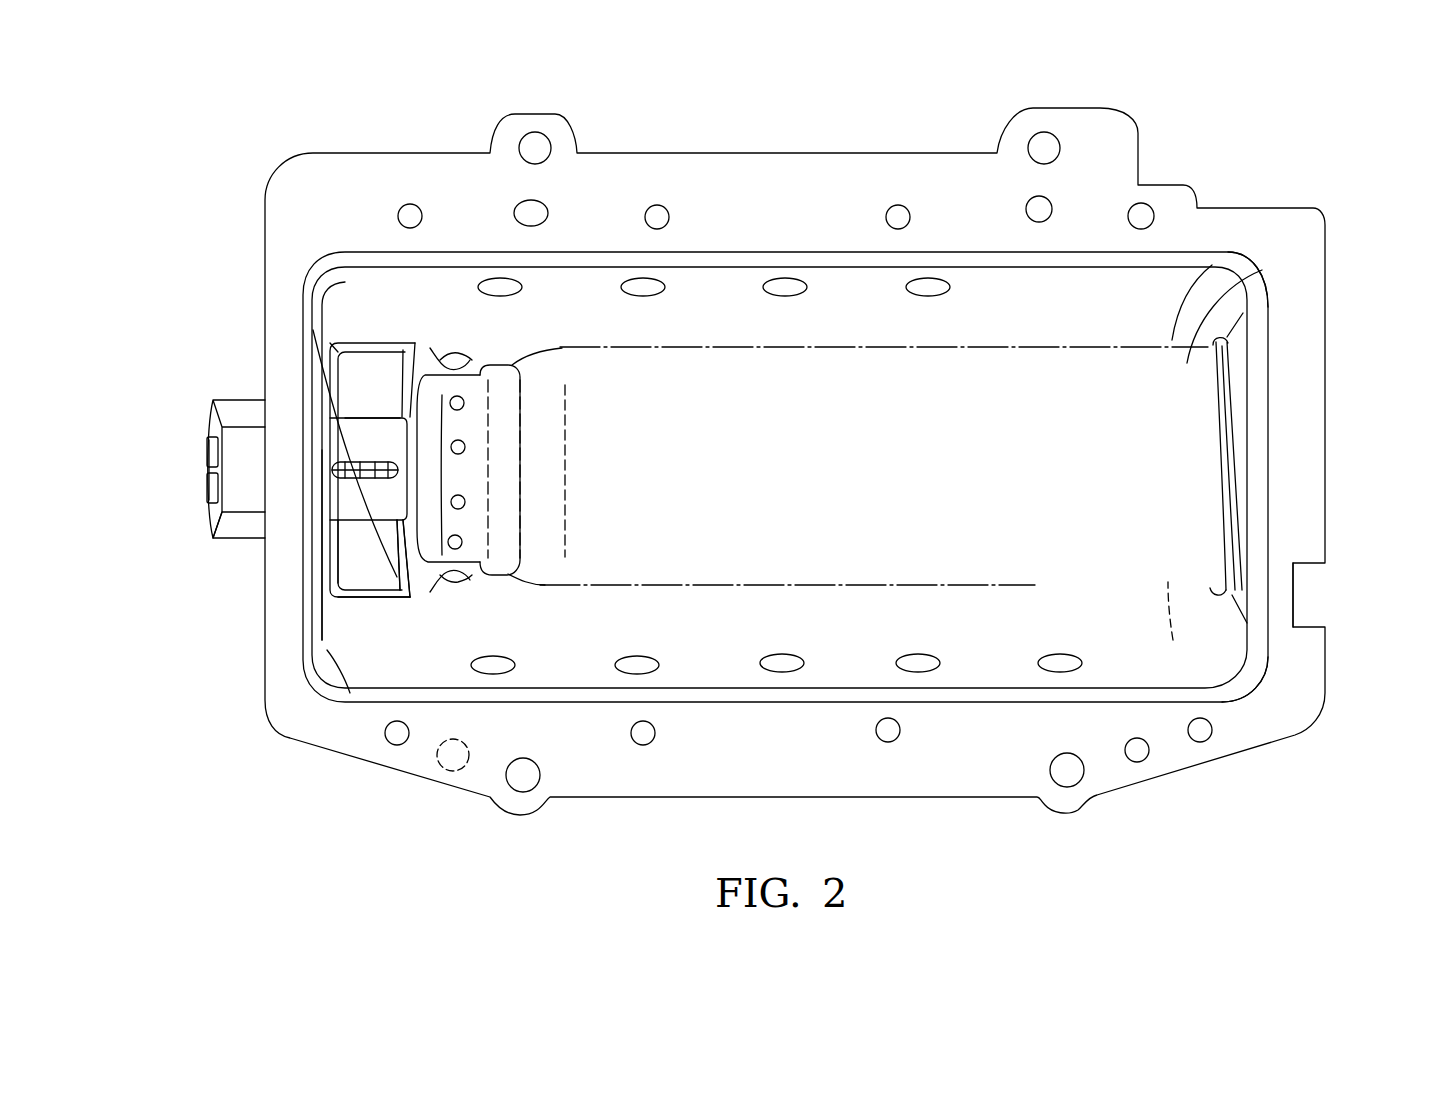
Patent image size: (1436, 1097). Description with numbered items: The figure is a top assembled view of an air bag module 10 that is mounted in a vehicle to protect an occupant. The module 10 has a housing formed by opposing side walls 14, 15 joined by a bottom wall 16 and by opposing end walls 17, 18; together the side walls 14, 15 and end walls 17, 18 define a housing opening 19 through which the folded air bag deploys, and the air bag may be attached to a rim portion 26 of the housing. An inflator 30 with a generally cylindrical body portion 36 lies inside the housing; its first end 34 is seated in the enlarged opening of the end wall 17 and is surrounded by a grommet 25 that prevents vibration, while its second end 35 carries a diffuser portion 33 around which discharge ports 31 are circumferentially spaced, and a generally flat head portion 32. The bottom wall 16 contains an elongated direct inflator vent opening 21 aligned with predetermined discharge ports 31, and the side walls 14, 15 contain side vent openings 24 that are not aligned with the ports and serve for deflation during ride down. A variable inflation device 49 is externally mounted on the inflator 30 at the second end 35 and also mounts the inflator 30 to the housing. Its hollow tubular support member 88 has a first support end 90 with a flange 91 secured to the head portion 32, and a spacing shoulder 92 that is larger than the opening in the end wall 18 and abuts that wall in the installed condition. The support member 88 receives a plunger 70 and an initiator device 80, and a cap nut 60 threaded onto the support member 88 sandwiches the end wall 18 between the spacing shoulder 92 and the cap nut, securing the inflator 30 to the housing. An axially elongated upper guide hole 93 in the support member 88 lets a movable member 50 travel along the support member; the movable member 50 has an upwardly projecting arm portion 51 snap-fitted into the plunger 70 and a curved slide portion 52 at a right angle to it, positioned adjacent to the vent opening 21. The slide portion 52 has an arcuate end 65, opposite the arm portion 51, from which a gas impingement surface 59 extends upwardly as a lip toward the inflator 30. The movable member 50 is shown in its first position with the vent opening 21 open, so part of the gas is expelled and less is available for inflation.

The air bag module 10 is at (1313, 155).
The side wall 14 is at (1163, 283).
The side wall 15 is at (680, 677).
The bottom wall 16 is at (1142, 588).
The end wall 17 is at (1233, 578).
The end wall 18 is at (340, 650).
The housing opening 19 is at (1173, 640).
The direct inflator vent opening 21 is at (440, 356).
The side vent openings 24 is at (800, 655).
The grommet 25 is at (1247, 392).
The rim portion 26 is at (1303, 315).
The inflator 30 is at (818, 372).
The discharge ports 31 is at (465, 447).
The head portion 32 is at (440, 388).
The diffuser portion 33 is at (473, 530).
The first end 34 is at (1250, 280).
The second end 35 is at (577, 355).
The body portion 36 is at (962, 380).
The variable inflation device 49 is at (213, 533).
The movable member 50 is at (364, 603).
The slide portion 52 is at (365, 598).
The arm portion 51 is at (343, 553).
The gas impingement surface 59 is at (390, 575).
The cap nut 60 is at (208, 415).
The end 65 is at (411, 573).
The plunger 70 is at (368, 463).
The initiator device 80 is at (201, 470).
The support member 88 is at (380, 412).
The first support end 90 is at (375, 255).
The flange 91 is at (401, 363).
The spacing shoulder 92 is at (327, 530).
The upper guide hole 93 is at (340, 602).